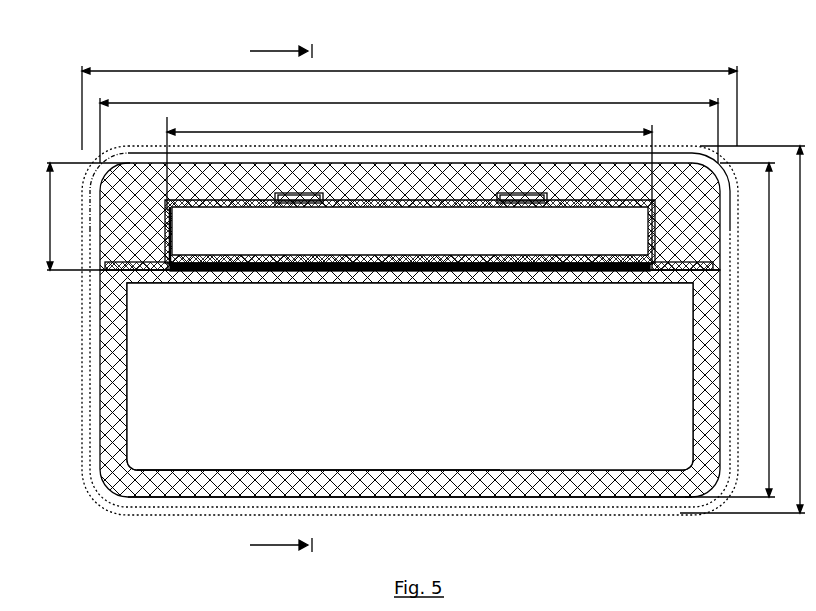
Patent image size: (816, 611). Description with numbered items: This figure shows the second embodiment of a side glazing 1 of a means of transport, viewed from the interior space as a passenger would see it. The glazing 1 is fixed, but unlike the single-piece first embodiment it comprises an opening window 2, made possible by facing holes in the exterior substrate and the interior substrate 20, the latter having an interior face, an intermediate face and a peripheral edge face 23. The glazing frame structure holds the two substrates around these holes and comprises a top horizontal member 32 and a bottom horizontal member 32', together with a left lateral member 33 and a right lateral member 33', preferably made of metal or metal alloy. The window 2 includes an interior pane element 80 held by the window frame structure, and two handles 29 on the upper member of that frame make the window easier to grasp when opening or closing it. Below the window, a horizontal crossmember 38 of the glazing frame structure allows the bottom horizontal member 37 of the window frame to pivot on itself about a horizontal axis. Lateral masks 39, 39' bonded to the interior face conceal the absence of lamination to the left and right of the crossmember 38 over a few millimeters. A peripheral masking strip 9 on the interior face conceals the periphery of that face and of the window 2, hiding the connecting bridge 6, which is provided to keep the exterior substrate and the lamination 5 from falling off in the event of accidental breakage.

The side glazing 1 is at (180, 68).
The opening window 2 is at (186, 228).
The lamination 5 is at (107, 445).
The connecting bridge 6 is at (365, 482).
The peripheral masking strip 9 is at (240, 487).
The interior substrate 20 is at (394, 396).
The peripheral edge face 23 is at (448, 498).
The handles 29 is at (516, 196).
The top horizontal member 32 is at (410, 155).
The bottom horizontal member 32' is at (410, 395).
The left lateral member 33 is at (376, 330).
The right lateral member 33' is at (742, 329).
The bottom horizontal member of the window frame 37 is at (276, 258).
The horizontal crossmember 38 is at (435, 272).
The lateral mask 39 is at (148, 296).
The lateral mask 39' is at (666, 293).
The interior pane element 80 is at (394, 243).